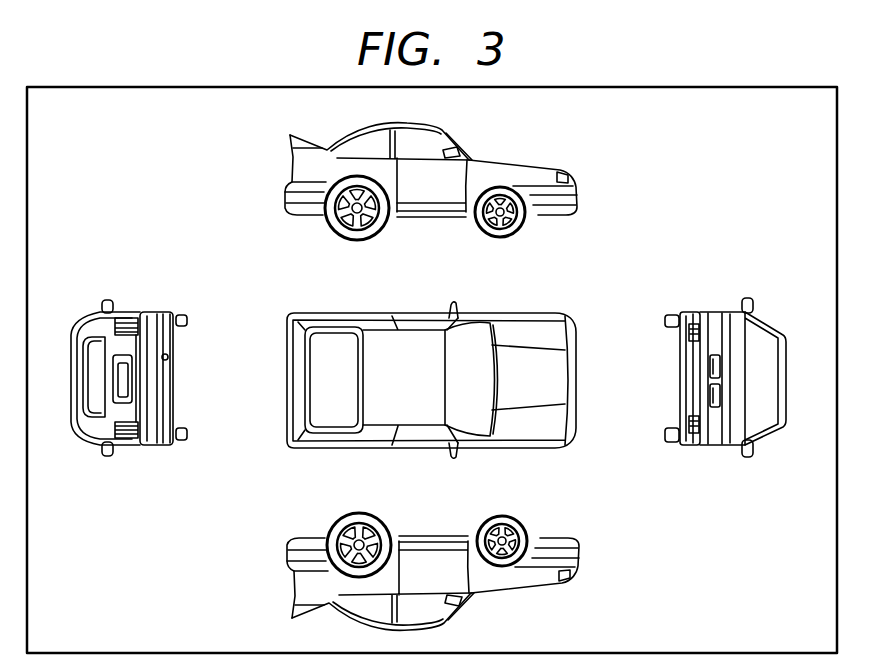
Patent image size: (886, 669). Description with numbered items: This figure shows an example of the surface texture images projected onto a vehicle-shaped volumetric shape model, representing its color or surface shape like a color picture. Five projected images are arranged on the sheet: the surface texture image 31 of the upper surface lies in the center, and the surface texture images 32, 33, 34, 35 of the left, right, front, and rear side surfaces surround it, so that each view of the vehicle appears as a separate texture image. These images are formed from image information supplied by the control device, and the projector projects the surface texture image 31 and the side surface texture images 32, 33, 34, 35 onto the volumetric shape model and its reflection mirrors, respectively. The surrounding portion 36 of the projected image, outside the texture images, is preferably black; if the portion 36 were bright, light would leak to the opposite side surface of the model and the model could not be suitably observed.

The surface texture image of the upper surface 31 is at (536, 310).
The surface texture image of a side surface 32 is at (717, 308).
The surface texture image of a side surface 33 is at (306, 537).
The surface texture image of a side surface 34 is at (307, 223).
The surface texture image of a side surface 35 is at (145, 308).
The portion except the surface texture images 36 is at (768, 105).